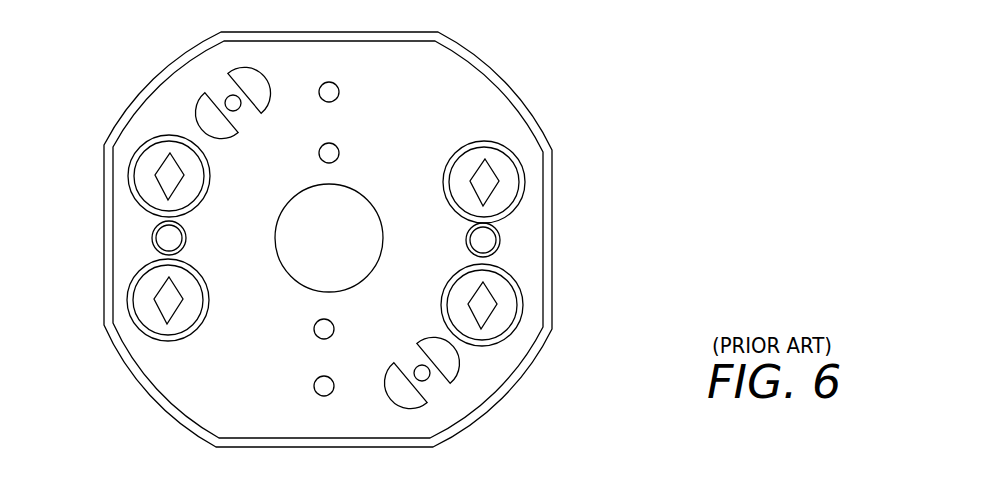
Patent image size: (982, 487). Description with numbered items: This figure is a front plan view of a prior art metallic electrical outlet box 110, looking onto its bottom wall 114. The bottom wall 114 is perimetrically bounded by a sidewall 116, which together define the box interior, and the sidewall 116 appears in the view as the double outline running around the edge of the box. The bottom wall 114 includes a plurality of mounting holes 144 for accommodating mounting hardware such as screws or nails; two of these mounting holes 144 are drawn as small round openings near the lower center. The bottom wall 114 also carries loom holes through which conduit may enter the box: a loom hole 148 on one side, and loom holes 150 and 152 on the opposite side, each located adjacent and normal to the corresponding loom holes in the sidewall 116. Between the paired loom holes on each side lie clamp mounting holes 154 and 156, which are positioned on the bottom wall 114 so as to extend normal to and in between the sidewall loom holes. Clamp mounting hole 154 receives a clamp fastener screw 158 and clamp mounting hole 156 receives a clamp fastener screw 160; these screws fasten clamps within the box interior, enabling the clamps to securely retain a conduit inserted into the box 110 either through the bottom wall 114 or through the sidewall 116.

The electrical outlet box 110 is at (377, 239).
The bottom wall 114 is at (472, 389).
The sidewall 116 is at (527, 363).
The mounting holes 144 is at (311, 342).
The loom hole 148 is at (157, 173).
The loom hole 150 is at (522, 310).
The loom hole 152 is at (527, 179).
The clamp mounting hole 154 is at (150, 245).
The clamp mounting hole 156 is at (499, 254).
The clamp fastener screw 158 is at (153, 234).
The clamp fastener screw 160 is at (502, 239).